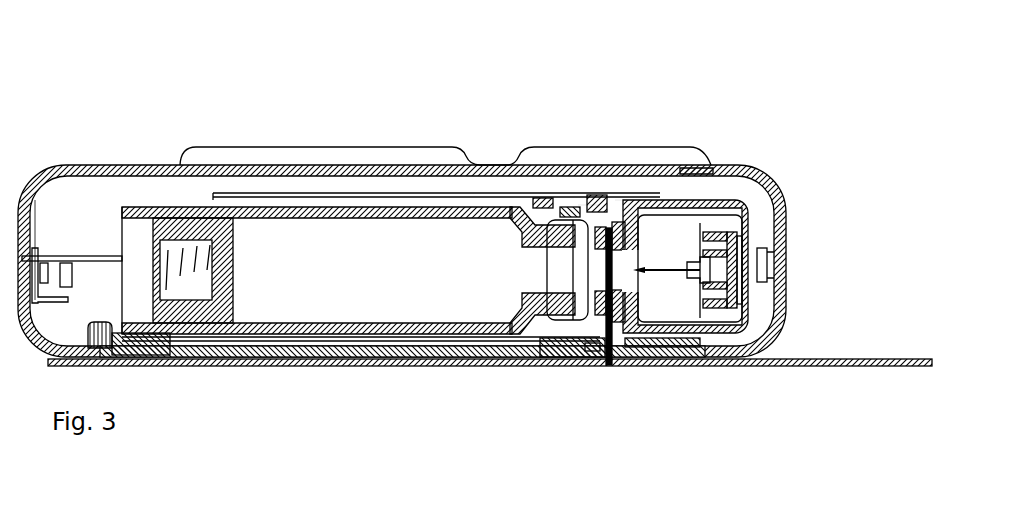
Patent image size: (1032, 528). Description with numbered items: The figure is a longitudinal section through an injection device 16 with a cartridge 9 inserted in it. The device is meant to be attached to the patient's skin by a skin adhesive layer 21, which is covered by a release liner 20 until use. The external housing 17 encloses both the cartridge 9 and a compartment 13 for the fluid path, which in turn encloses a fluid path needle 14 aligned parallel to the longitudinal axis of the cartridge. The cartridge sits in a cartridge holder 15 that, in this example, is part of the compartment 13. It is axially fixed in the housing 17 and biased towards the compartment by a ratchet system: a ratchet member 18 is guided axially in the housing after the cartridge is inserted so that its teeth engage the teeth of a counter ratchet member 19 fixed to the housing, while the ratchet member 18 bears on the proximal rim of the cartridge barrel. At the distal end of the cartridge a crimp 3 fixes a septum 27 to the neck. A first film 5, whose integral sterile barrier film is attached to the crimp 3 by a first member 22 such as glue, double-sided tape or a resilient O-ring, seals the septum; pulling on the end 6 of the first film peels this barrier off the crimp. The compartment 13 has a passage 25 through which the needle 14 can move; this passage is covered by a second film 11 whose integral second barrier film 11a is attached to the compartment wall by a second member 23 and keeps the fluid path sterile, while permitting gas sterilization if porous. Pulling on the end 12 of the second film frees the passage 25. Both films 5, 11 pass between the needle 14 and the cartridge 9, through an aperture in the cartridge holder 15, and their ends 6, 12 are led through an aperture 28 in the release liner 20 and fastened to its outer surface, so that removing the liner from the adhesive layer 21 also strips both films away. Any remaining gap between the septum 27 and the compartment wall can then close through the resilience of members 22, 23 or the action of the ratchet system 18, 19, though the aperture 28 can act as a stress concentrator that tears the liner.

The crimp 3 is at (582, 200).
The first film 5 is at (604, 272).
The end of the first film 6 is at (604, 333).
The cartridge 9 is at (288, 335).
The second film 11 is at (641, 332).
The second barrier film 11a is at (620, 200).
The end of the second film 12 is at (600, 341).
The compartment for the fluid path 13 is at (692, 356).
The fluid path needle 14 is at (672, 266).
The cartridge holder 15 is at (531, 194).
The injection device 16 is at (335, 135).
The external housing 17 is at (115, 165).
The ratchet member 18 is at (100, 349).
The counter ratchet member 19 is at (147, 352).
The release liner 20 is at (233, 337).
The skin adhesive layer 21 is at (180, 340).
The first member 22 is at (598, 212).
The second member 23 is at (632, 206).
The passage 25 is at (633, 260).
The septum 27 is at (583, 267).
The aperture in the release liner 28 is at (628, 336).